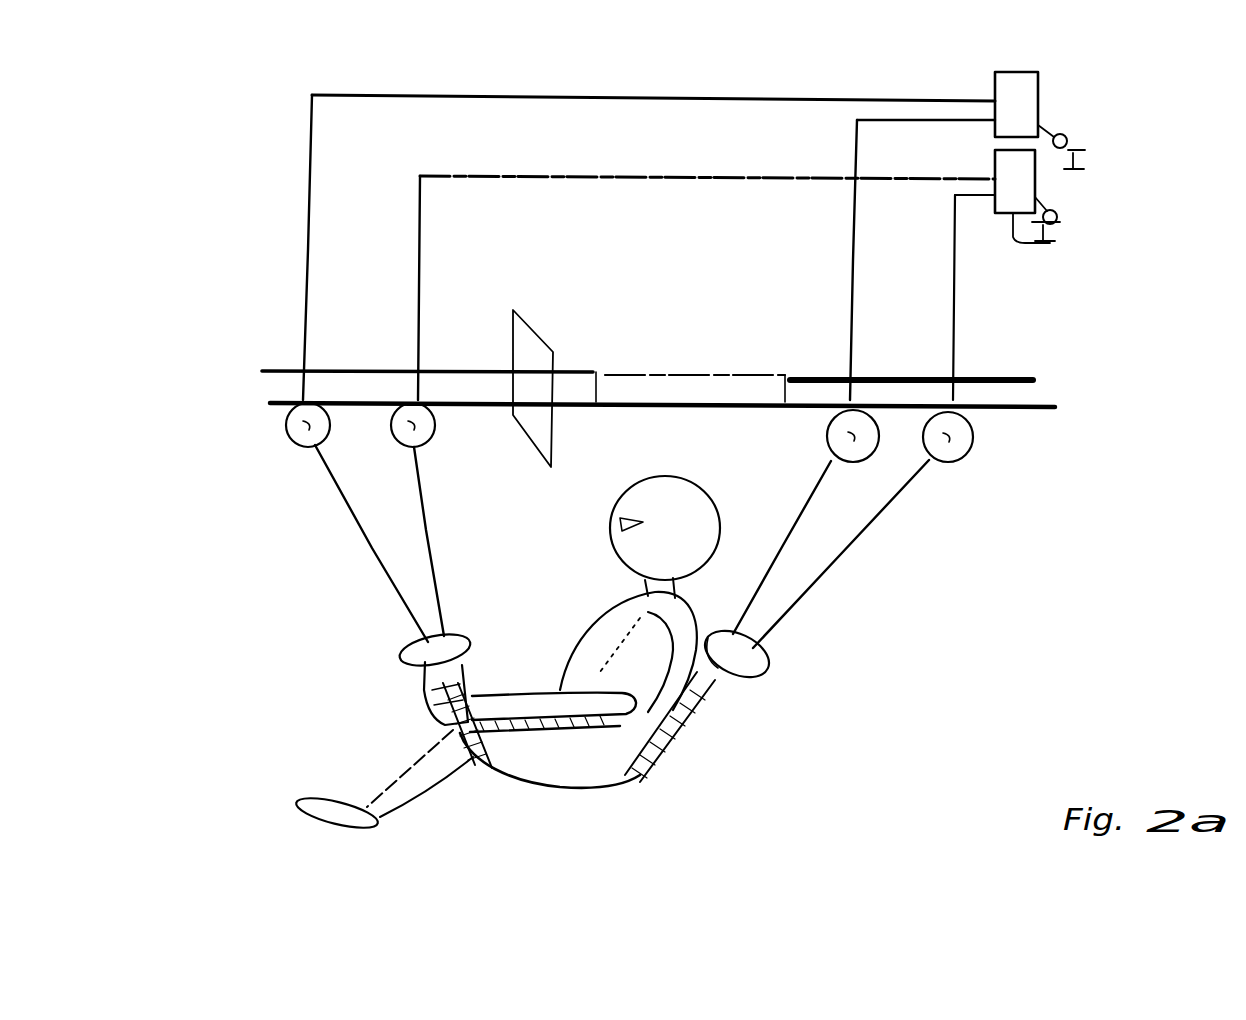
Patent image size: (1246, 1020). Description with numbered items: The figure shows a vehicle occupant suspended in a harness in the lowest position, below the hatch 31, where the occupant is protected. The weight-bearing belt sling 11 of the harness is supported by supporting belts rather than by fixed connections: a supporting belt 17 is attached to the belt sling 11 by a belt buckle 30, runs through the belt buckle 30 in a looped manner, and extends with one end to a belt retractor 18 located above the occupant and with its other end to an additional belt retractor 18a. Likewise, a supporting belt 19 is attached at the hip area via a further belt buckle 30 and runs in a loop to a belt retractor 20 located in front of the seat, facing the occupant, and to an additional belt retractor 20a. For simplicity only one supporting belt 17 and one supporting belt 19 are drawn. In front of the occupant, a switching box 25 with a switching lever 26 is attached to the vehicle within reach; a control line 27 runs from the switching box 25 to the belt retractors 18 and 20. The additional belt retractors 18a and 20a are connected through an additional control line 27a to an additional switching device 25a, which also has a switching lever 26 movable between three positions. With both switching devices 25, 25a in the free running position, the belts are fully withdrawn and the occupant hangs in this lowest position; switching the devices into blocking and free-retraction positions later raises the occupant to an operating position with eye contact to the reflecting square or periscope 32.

The belt sling 11 is at (610, 790).
The supporting belt 17 is at (851, 555).
The belt retractor 18 is at (875, 450).
The additional belt retractor 18a is at (965, 448).
The supporting belt 19 is at (366, 535).
The belt retractor 20 is at (286, 423).
The additional belt retractor 20a is at (392, 445).
The switching box 25 is at (1030, 85).
The additional switching device 25a is at (1030, 243).
The switching lever 26 is at (1067, 146).
The control line 27 is at (305, 270).
The additional control line 27a is at (420, 318).
The belt buckle 30 is at (423, 680).
The hatch 31 is at (708, 390).
The reflecting square or periscope 32 is at (533, 423).